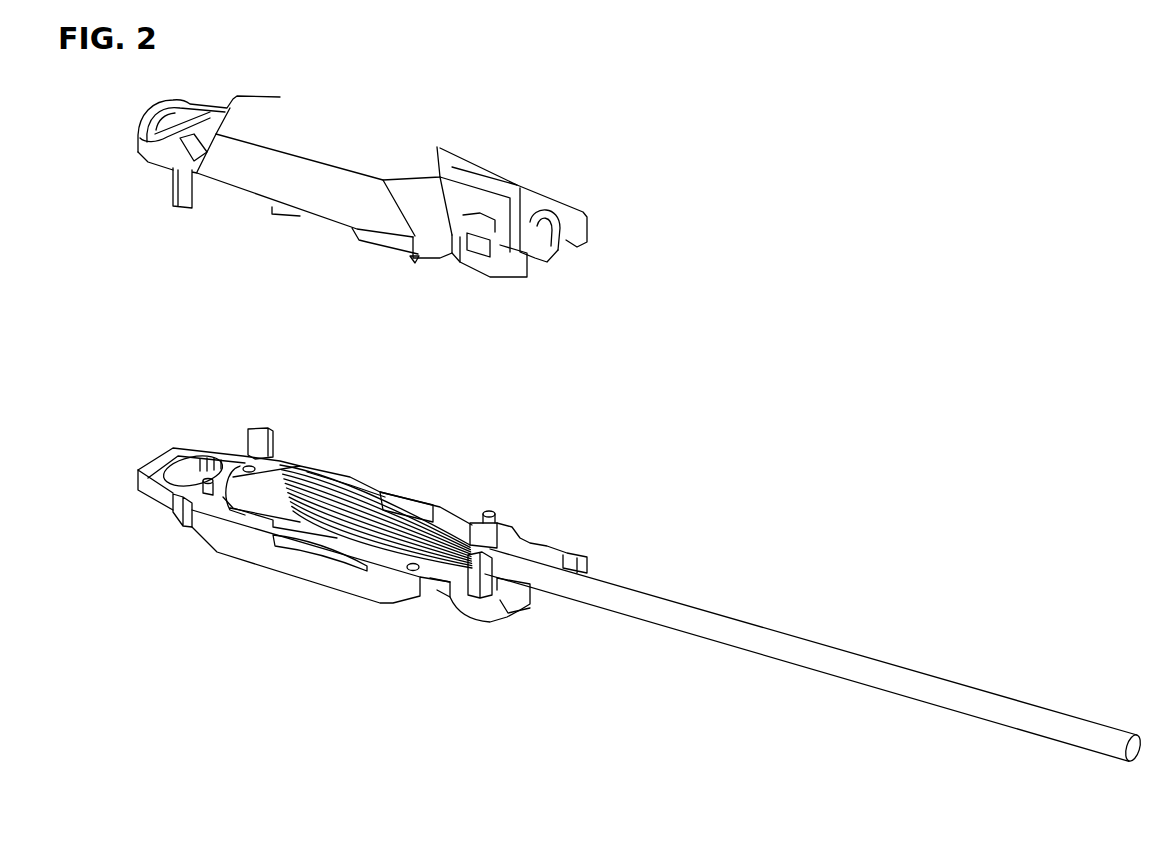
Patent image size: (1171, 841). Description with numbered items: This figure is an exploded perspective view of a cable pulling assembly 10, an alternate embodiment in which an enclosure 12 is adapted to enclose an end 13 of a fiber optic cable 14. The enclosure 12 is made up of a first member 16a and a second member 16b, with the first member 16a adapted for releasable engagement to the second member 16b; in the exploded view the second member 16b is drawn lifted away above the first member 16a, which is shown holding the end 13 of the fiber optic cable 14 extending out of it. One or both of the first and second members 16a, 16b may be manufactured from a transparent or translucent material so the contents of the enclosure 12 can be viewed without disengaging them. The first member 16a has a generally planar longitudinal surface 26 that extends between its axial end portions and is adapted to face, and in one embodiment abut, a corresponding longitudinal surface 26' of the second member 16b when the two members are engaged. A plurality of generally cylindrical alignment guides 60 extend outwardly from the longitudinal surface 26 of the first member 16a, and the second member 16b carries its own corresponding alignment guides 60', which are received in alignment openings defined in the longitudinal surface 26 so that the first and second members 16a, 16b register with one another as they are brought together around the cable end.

The cable pulling assembly 10 is at (814, 295).
The enclosure 12 is at (121, 514).
The end 13 is at (437, 513).
The fiber optic cable 14 is at (837, 635).
The first member 16a is at (332, 606).
The second member 16b is at (403, 134).
The longitudinal surface 26 is at (305, 458).
The corresponding longitudinal surface 26' is at (307, 231).
The alignment guides 60 is at (160, 447).
The alignment guides 60' is at (429, 291).